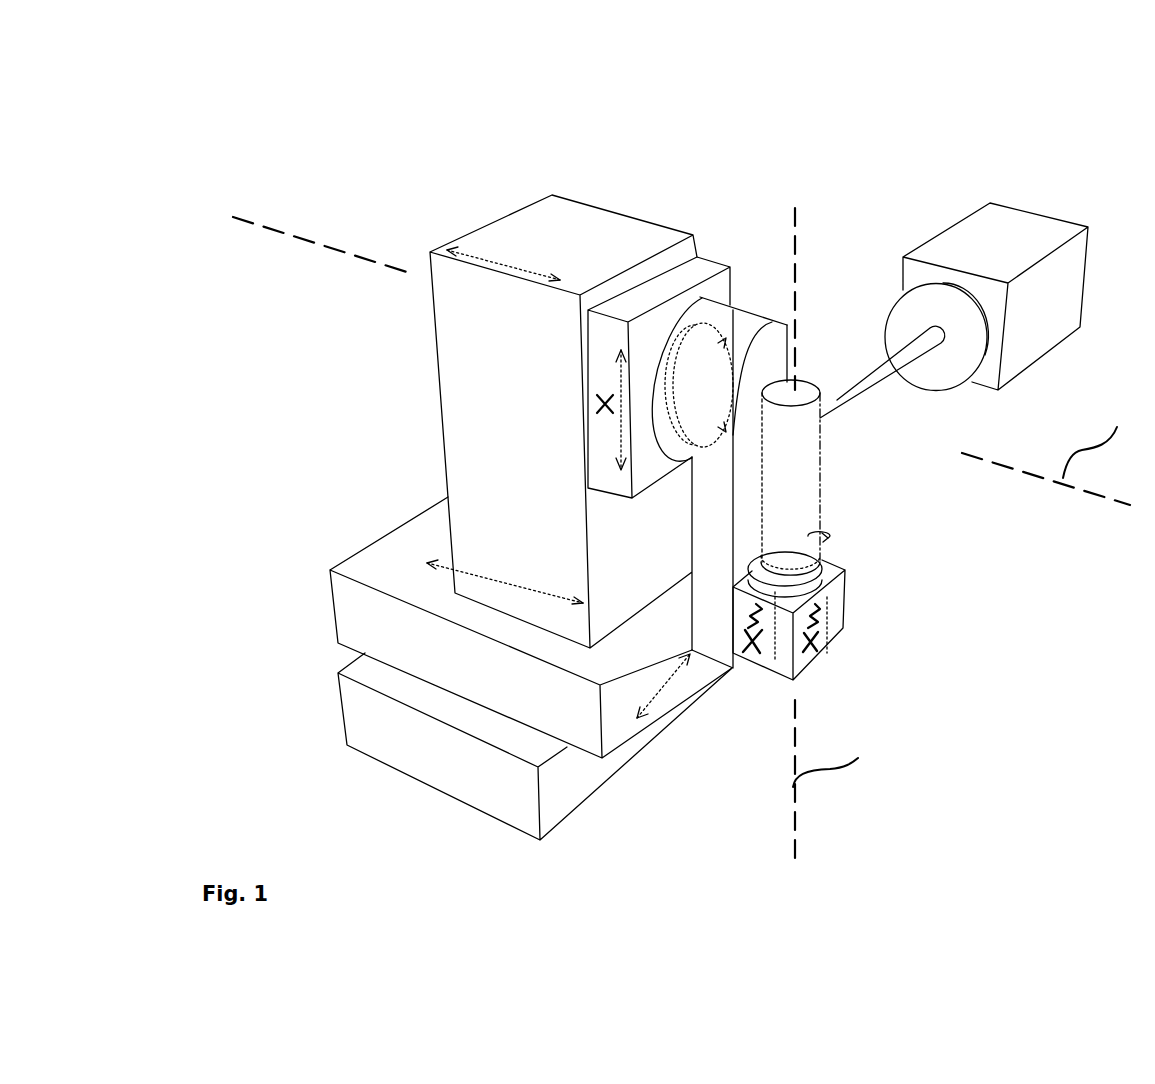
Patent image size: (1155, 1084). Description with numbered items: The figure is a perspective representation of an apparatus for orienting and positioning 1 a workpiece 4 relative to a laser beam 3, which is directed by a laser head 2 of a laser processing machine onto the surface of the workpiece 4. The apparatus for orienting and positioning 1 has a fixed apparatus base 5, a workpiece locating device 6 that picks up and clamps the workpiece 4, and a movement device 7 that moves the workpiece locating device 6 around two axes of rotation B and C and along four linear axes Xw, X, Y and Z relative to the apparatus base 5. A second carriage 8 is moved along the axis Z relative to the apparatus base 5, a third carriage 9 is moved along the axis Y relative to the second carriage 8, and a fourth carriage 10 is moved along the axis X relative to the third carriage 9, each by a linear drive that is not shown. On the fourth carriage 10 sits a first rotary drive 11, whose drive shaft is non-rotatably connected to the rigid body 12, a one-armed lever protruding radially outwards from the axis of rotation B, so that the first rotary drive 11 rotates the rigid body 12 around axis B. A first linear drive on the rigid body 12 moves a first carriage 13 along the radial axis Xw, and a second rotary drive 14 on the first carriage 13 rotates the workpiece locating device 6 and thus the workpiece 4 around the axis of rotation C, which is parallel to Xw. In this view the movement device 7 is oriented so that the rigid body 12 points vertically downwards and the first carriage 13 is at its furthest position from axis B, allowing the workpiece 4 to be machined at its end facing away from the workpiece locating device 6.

The apparatus for orienting and positioning 1 is at (428, 188).
The laser head 2 is at (1003, 230).
The laser beam 3 is at (900, 362).
The workpiece 4 is at (803, 496).
The apparatus base 5 is at (416, 745).
The workpiece locating device 6 is at (818, 568).
The movement device 7 is at (412, 470).
The second carriage 8 is at (377, 617).
The third carriage 9 is at (612, 227).
The fourth carriage 10 is at (698, 267).
The first rotary drive 11 is at (697, 315).
The rigid body 12 is at (767, 355).
The first carriage 13 is at (833, 628).
The second rotary drive 14 is at (808, 587).